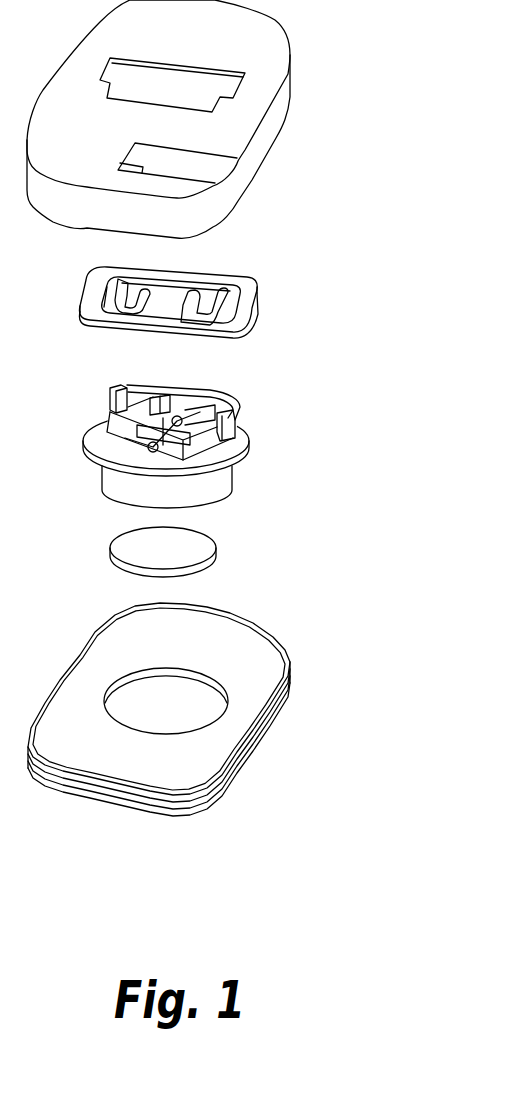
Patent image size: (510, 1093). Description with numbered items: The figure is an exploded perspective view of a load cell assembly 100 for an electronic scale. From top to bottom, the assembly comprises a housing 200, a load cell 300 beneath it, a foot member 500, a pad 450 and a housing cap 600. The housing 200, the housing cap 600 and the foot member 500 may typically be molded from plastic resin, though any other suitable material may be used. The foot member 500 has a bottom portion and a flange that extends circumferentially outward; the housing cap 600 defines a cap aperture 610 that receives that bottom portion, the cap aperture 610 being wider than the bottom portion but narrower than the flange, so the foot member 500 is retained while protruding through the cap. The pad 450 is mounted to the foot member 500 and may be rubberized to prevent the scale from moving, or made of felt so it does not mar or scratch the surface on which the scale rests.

The load cell assembly 100 is at (180, 890).
The housing 200 is at (255, 145).
The load cell 300 is at (250, 313).
The foot member 500 is at (248, 457).
The pad 450 is at (217, 552).
The housing cap 600 is at (230, 709).
The cap aperture 610 is at (189, 706).